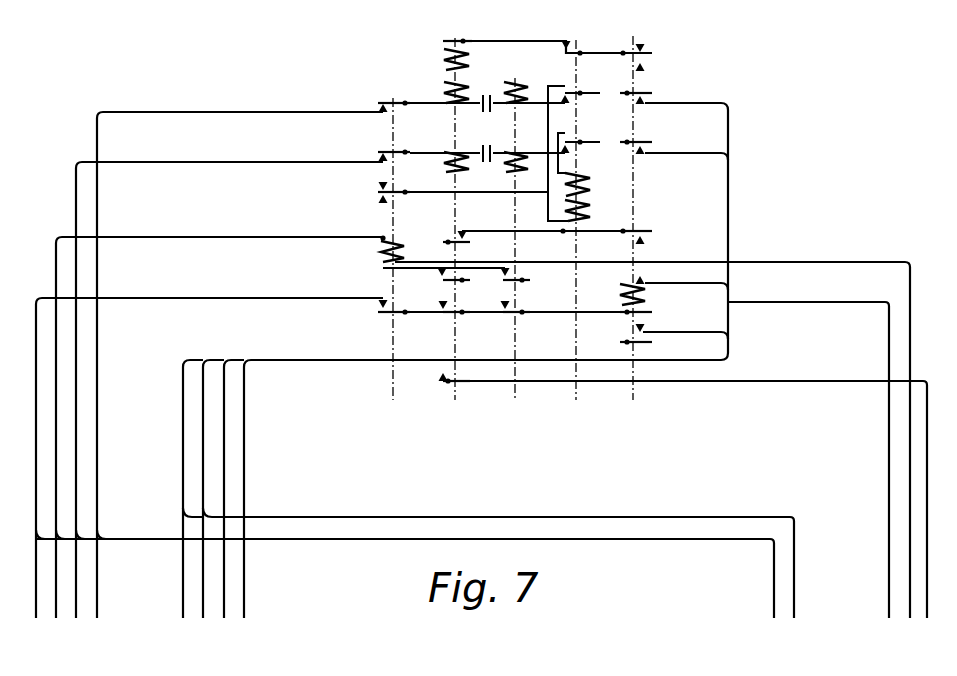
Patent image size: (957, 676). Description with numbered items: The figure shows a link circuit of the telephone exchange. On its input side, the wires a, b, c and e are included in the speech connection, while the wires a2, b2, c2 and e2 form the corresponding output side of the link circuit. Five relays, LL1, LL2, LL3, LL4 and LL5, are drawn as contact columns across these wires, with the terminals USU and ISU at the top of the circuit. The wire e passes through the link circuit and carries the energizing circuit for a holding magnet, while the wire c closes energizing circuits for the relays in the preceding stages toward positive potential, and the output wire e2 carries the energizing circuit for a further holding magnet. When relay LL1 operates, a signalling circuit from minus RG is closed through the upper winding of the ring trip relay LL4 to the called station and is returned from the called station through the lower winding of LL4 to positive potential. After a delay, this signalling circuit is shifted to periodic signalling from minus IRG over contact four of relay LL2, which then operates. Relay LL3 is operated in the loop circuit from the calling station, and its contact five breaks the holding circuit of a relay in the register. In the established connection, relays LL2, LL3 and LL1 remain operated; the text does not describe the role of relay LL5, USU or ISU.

The relay LL1 is at (633, 228).
The relay LL2 is at (392, 262).
The relay LL3 is at (454, 235).
The ring trip relay LL4 is at (575, 236).
The relay LL5 contact column LL5 is at (514, 255).
The wire a is at (242, 315).
The wire b is at (232, 340).
The wire c is at (483, 417).
The wire e is at (212, 409).
The wire a2 is at (486, 350).
The wire b2 is at (475, 375).
The wire c2 is at (497, 440).
The wire e2 is at (453, 465).
The USU supply terminal USU is at (664, 45).
The ISU supply terminal ISU is at (660, 67).
The minus RG is at (443, 183).
The minus IRG is at (352, 201).